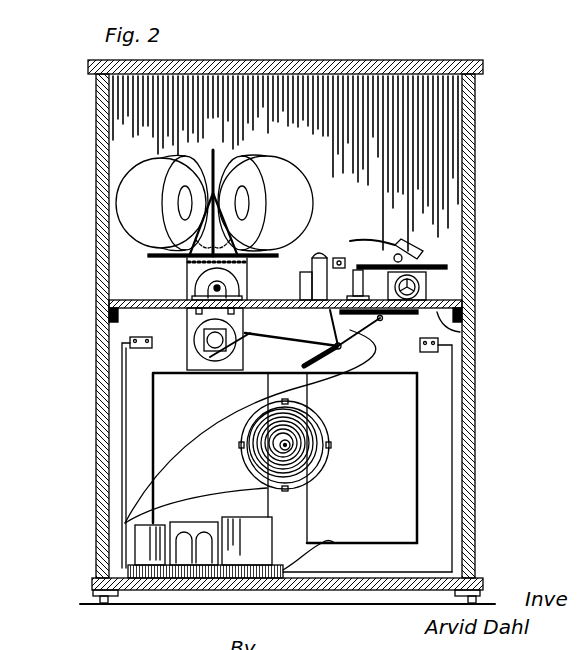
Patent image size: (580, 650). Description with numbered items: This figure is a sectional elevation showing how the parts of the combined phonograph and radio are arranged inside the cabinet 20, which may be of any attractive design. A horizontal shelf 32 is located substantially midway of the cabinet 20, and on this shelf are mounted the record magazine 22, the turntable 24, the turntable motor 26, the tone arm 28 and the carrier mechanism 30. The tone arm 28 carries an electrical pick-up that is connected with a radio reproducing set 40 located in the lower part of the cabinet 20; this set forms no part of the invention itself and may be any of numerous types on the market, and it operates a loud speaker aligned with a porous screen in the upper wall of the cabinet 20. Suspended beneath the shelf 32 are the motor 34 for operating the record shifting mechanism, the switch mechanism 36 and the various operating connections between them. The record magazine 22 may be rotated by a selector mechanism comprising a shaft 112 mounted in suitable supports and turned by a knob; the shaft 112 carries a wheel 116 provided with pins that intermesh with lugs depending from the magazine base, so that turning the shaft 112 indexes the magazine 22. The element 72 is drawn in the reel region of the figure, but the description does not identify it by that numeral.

The cabinet 20 is at (89, 157).
The film reels 72 is at (170, 192).
The record magazine 22 is at (143, 261).
The wheel 116 is at (200, 284).
The carrier mechanism 30 is at (318, 252).
The tone arm 28 is at (393, 241).
The turntable 24 is at (432, 270).
The turntable motor 26 is at (420, 295).
The motor 34 is at (196, 350).
The horizontal shelf 32 is at (466, 347).
The switch mechanism 36 is at (370, 320).
The shaft 112 is at (330, 452).
The radio reproducing set 40 is at (150, 578).